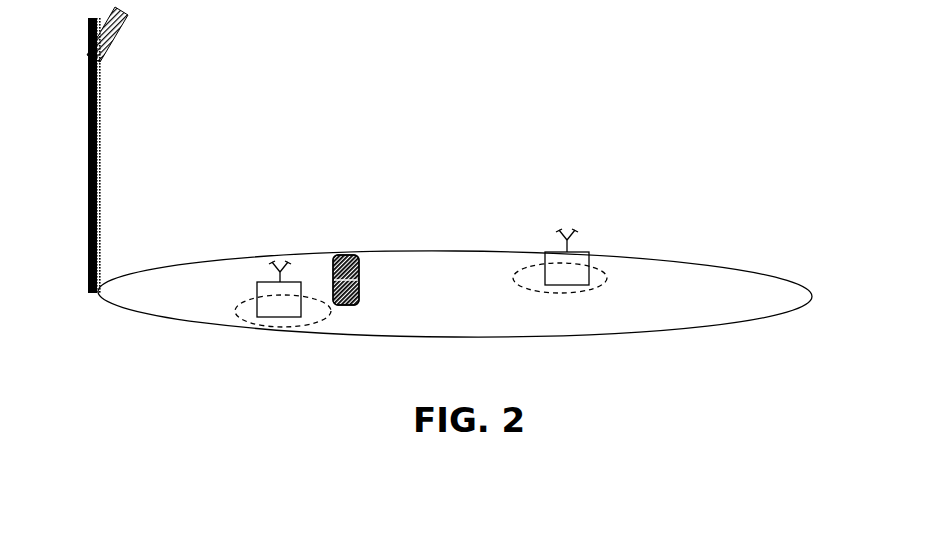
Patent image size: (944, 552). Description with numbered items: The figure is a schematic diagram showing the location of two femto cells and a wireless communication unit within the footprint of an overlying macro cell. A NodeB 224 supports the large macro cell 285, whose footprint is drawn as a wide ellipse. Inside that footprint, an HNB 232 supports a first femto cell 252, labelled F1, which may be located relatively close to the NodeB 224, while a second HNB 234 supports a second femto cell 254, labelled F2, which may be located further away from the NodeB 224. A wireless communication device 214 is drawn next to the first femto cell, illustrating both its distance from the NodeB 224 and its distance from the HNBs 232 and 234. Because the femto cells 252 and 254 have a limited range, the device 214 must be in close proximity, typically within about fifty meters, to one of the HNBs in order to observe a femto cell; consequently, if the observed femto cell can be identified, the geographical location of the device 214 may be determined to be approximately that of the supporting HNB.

The wireless communication device 214 is at (359, 280).
The NodeB 224 is at (88, 139).
The HNB 232 is at (255, 305).
The HNB 234 is at (575, 250).
The first femto cell 252 is at (300, 325).
The second femto cell 254 is at (605, 283).
The macro cell 285 is at (135, 308).